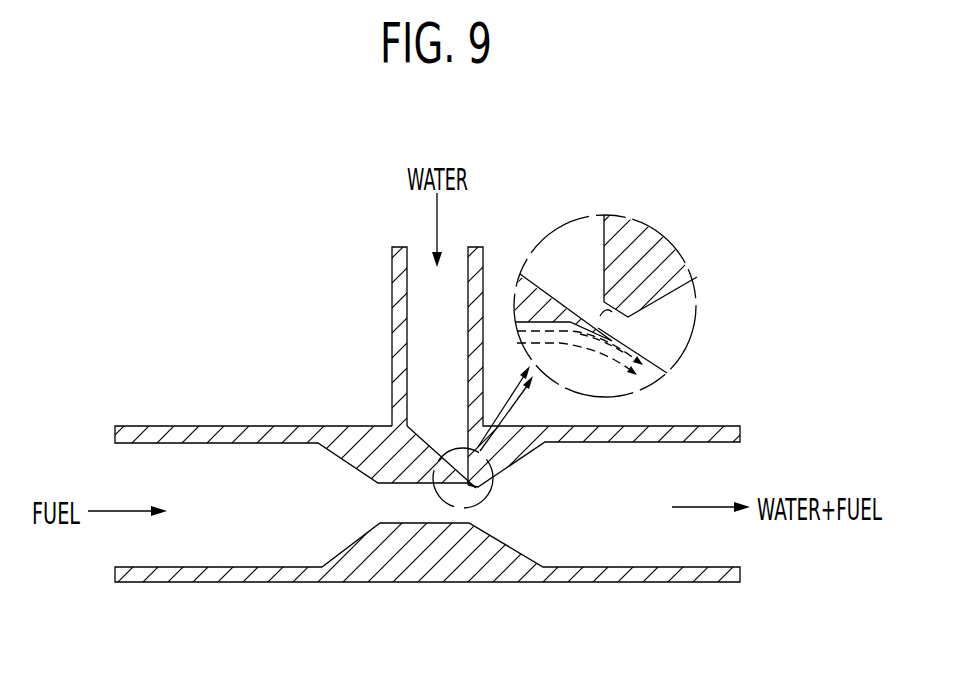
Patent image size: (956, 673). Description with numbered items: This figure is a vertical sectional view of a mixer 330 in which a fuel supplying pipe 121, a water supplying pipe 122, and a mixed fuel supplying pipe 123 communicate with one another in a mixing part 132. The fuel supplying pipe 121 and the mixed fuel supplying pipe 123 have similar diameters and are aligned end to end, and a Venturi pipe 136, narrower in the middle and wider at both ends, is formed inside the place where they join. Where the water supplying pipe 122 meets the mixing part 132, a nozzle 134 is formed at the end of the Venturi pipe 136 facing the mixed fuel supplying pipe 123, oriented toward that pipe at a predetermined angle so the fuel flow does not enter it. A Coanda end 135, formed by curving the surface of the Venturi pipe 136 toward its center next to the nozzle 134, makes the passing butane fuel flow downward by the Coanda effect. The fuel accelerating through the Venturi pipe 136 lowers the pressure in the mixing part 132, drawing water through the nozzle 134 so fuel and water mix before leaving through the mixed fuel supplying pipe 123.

The fuel supplying pipe 121 is at (228, 434).
The water supplying pipe 122 is at (397, 301).
The mixed fuel supplying pipe 123 is at (740, 426).
The mixing part 132 is at (529, 519).
The nozzle 134 is at (612, 312).
The Coanda end 135 is at (667, 373).
The Venturi pipe 136 is at (443, 523).
The mixer 330 is at (625, 270).